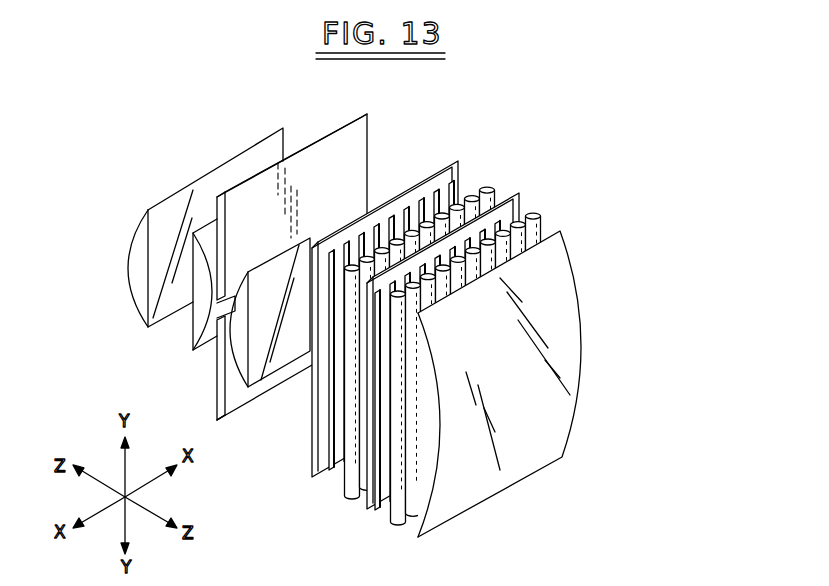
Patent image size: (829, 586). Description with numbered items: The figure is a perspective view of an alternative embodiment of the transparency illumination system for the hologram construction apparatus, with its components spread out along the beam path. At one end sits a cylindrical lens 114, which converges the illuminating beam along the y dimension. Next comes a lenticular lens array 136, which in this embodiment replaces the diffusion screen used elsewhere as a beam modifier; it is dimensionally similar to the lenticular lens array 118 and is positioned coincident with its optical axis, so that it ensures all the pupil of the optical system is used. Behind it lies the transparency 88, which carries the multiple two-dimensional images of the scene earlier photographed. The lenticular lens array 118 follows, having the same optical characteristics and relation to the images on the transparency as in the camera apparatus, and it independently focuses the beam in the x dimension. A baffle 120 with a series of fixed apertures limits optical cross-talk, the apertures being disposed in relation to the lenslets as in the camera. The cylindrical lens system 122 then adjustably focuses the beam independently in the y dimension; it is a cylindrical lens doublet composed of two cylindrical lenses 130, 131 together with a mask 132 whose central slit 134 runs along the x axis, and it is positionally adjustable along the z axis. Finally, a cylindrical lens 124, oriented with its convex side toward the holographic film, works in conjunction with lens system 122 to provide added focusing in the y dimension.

The cylindrical lens 124 is at (223, 166).
The cylindrical lens system 122 is at (348, 88).
The baffle 120 is at (458, 166).
The lenticular lens array 118 is at (488, 184).
The transparency 88 is at (513, 202).
The lenticular lens array 136 is at (541, 219).
The cylindrical lens 114 is at (569, 256).
The central slit 134 is at (217, 313).
The cylindrical lens 131 is at (200, 345).
The cylindrical lens 130 is at (272, 378).
The mask 132 is at (224, 426).